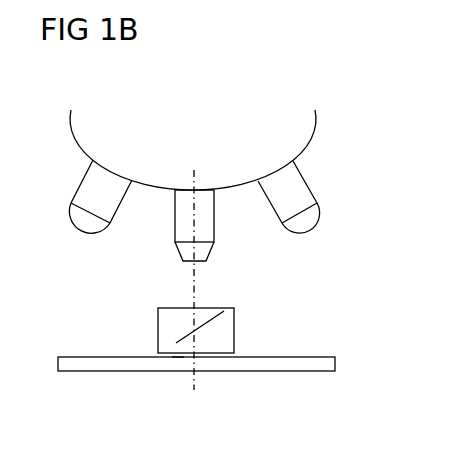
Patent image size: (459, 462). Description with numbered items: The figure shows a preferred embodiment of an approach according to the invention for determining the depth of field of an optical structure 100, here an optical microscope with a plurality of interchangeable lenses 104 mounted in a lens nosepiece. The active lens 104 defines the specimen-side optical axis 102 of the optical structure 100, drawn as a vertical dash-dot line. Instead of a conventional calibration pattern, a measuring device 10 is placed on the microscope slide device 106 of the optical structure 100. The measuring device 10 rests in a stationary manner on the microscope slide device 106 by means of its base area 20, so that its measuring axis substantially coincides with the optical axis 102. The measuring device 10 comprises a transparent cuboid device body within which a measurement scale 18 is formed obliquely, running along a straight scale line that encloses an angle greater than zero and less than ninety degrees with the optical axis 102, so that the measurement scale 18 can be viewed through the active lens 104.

The optical structure 100 is at (241, 97).
The lens 104 is at (173, 232).
The optical axis 102 is at (197, 283).
The measuring device 10 is at (234, 338).
The measurement scale 18 is at (176, 343).
The base area 20 is at (174, 362).
The microscope slide device 106 is at (279, 367).